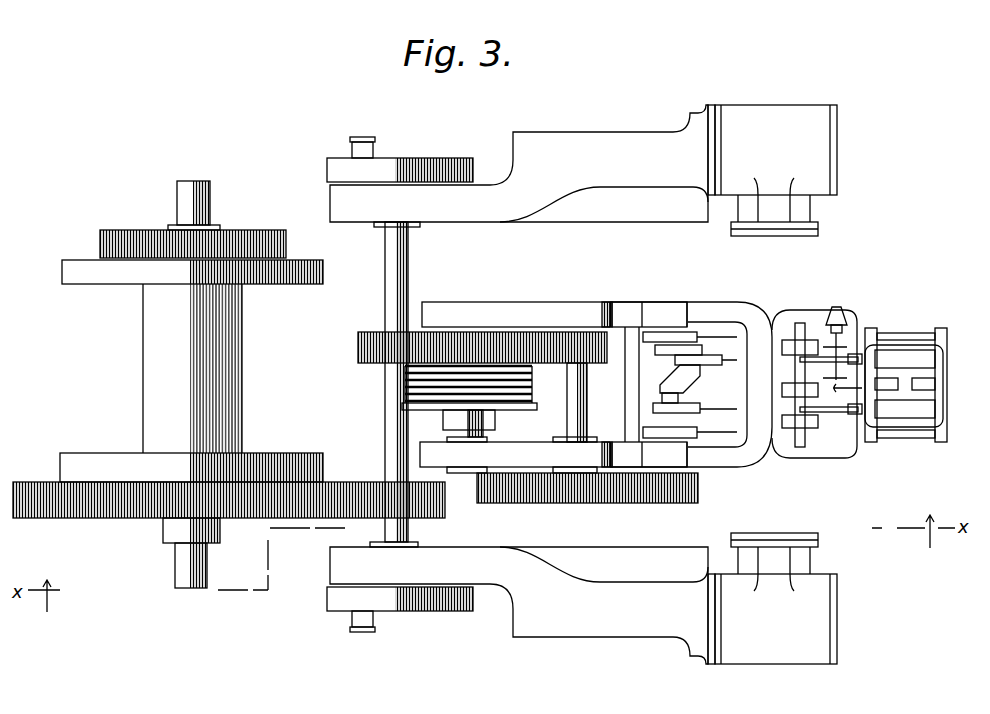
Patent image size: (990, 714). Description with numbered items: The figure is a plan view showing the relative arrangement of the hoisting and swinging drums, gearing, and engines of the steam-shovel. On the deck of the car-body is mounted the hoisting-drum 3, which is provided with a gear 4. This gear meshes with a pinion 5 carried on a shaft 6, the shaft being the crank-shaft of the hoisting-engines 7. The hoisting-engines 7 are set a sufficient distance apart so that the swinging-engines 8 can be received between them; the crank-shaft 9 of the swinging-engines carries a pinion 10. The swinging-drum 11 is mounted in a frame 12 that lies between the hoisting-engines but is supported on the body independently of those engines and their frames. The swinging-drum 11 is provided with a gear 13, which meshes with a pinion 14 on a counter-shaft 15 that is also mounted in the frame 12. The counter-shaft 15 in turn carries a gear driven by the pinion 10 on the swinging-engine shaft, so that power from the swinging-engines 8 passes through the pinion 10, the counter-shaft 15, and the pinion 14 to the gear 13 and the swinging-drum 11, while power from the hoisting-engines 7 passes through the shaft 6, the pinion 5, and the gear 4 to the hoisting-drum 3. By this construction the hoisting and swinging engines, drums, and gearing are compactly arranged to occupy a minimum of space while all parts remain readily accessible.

The hoisting-drum 3 is at (242, 382).
The gear 4 is at (281, 559).
The pinion 5 is at (436, 509).
The shaft 6 is at (385, 288).
The hoisting-engines 7 is at (627, 145).
The swinging-engines 8 is at (813, 348).
The crank-shaft 9 is at (778, 374).
The pinion 10 is at (592, 503).
The swinging-drum 11 is at (497, 425).
The frame 12 is at (556, 300).
The gear 13 is at (358, 348).
The pinion 14 is at (590, 326).
The counter-shaft 15 is at (567, 390).